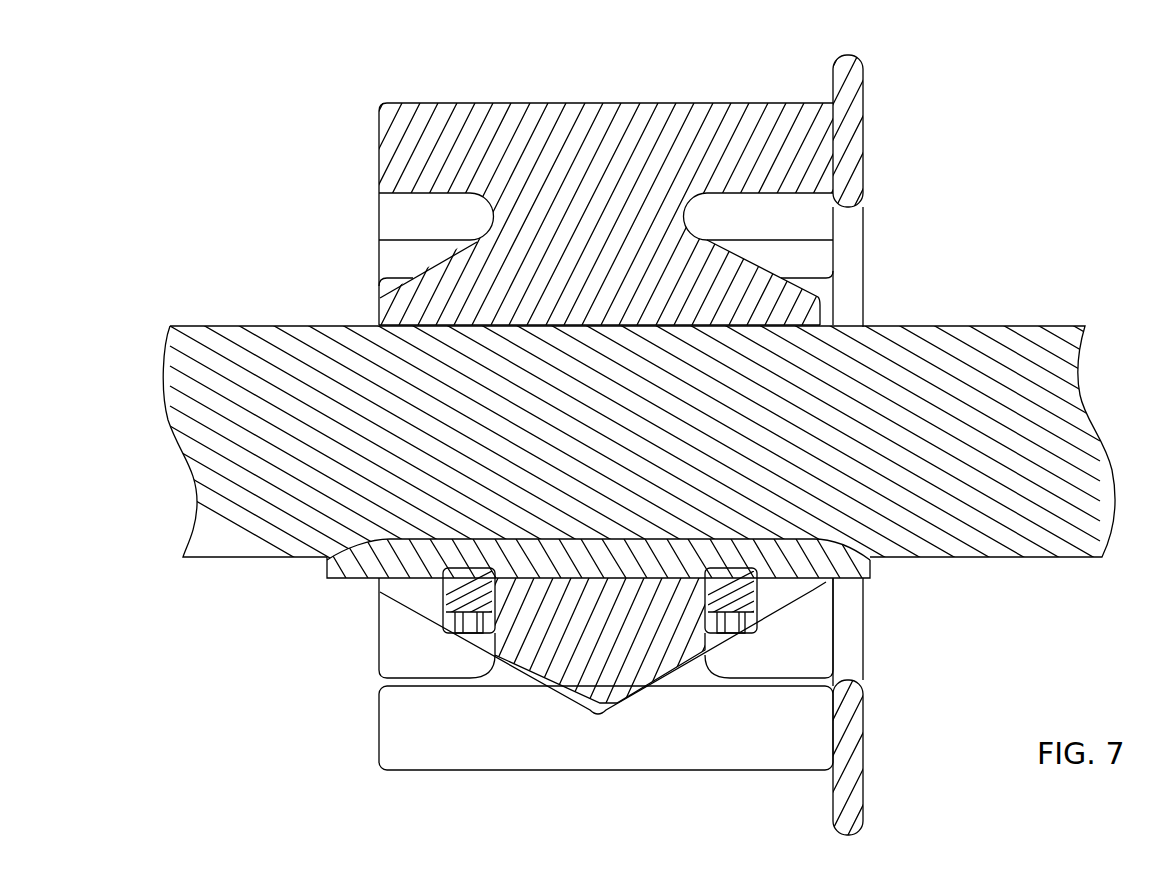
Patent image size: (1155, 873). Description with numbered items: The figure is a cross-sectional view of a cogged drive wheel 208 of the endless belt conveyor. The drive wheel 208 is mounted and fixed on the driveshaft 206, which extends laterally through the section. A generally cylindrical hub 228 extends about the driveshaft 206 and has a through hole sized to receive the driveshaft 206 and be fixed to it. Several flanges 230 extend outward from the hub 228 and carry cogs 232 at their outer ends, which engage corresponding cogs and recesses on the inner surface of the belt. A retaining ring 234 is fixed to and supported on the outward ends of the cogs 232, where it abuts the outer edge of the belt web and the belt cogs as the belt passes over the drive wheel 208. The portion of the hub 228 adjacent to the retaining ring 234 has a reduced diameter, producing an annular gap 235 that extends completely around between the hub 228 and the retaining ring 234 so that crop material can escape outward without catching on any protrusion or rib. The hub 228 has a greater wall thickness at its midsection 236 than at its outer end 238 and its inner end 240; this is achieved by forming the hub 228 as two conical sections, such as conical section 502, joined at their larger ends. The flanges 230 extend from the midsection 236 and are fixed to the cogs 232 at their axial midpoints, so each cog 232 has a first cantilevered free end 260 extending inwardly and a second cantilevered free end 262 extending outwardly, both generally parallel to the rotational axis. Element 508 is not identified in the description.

The driveshaft 206 is at (235, 375).
The cogged drive wheel 208 is at (467, 292).
The hub 228 is at (603, 273).
The flange 230 is at (513, 217).
The cog 232 is at (592, 155).
The retaining ring 234 is at (863, 110).
The annular gap 235 is at (893, 287).
The midsection 236 is at (596, 736).
The outer end 238 is at (798, 636).
The inner end 240 is at (438, 646).
The first cantilevered free end 260 is at (378, 137).
The second cantilevered free end 262 is at (817, 143).
The conical section 502 is at (653, 625).
The wedge 508 is at (530, 622).